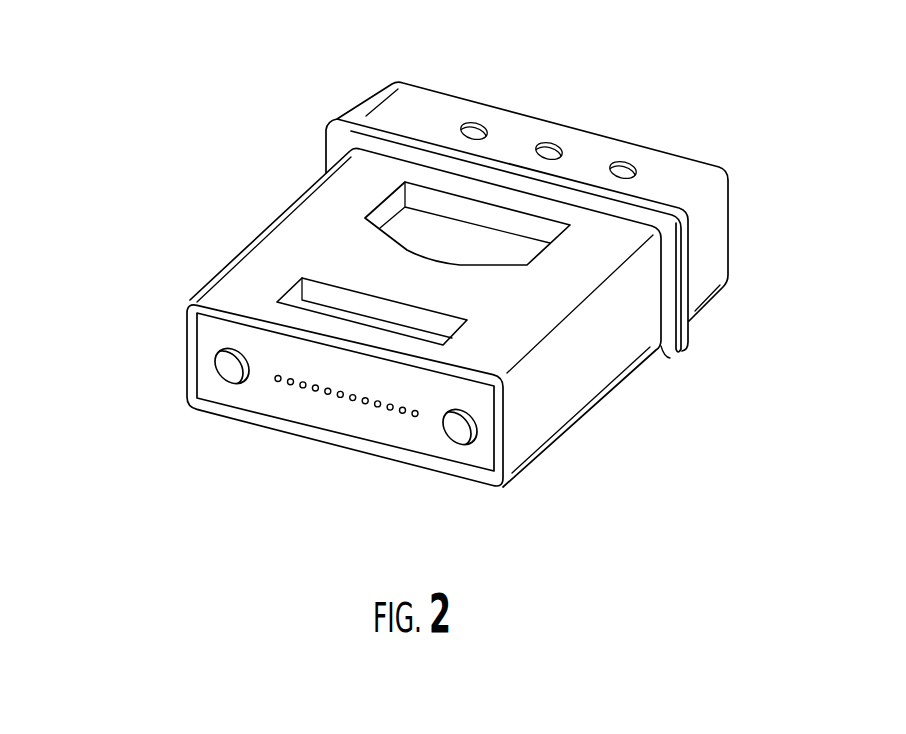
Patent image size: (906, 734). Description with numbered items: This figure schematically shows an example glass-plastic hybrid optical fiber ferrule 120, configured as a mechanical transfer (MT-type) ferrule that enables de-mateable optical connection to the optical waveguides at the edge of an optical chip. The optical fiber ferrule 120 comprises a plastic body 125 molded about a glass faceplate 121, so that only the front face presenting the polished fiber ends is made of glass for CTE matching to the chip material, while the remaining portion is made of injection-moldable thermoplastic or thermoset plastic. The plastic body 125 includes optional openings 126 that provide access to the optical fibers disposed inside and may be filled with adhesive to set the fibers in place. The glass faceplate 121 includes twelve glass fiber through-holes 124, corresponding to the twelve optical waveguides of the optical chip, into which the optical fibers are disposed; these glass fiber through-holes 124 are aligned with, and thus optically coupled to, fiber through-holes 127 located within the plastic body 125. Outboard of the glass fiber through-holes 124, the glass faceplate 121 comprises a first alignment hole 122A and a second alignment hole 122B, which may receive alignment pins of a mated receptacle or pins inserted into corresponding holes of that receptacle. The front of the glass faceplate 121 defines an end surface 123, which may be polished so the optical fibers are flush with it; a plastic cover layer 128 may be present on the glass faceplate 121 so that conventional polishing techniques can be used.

The optical fiber ferrule 120 is at (139, 137).
The glass faceplate 121 is at (288, 407).
The first alignment hole 122A is at (214, 360).
The second alignment hole 122B is at (465, 444).
The end surface 123 is at (230, 333).
The glass fiber through-holes 124 is at (337, 426).
The plastic body 125 is at (479, 87).
The openings 126 is at (430, 202).
The fiber through-holes 127 is at (352, 300).
The plastic cover layer 128 is at (670, 358).